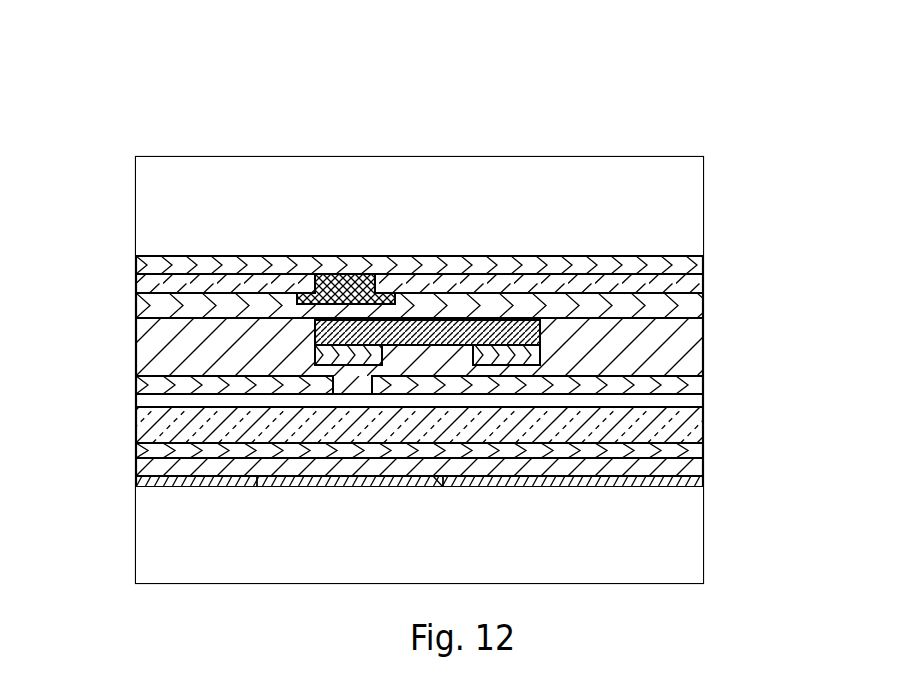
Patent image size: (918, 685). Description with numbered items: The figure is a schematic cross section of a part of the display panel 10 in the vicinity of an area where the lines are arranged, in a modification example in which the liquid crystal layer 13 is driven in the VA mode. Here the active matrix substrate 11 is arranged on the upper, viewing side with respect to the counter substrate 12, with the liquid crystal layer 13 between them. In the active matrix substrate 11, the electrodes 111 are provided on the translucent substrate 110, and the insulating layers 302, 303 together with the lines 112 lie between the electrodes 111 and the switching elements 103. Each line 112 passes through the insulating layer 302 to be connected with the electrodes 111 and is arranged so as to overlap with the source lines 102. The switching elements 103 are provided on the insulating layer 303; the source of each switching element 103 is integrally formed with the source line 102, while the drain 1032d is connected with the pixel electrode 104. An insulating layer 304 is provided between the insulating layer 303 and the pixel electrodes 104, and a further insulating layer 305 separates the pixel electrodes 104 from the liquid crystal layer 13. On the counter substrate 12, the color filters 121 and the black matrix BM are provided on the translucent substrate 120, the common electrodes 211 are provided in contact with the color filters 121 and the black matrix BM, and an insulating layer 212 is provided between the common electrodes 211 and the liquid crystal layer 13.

The display panel 10 is at (428, 340).
The active matrix substrate 11 is at (427, 287).
The counter substrate 12 is at (447, 513).
The liquid crystal layer 13 is at (693, 432).
The substrate 110 is at (693, 206).
The electrode 111 is at (693, 269).
The insulating layer 302 is at (693, 285).
The insulating layer 303 is at (693, 304).
The insulating layer 304 is at (693, 334).
The insulating layer 305 is at (459, 401).
The pixel electrode 104 is at (693, 387).
The line 112 is at (342, 274).
The switching element 103 is at (305, 336).
The source line 102 is at (314, 352).
The drain 1032d is at (542, 356).
The insulating layer 212 is at (693, 452).
The common electrode 211 is at (693, 470).
The color filter 121 is at (693, 483).
The substrate 120 is at (459, 535).
The black matrix BM is at (340, 478).